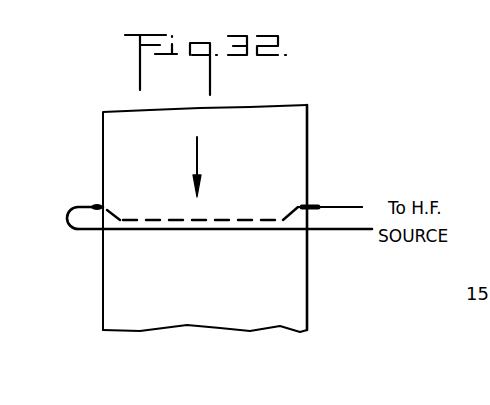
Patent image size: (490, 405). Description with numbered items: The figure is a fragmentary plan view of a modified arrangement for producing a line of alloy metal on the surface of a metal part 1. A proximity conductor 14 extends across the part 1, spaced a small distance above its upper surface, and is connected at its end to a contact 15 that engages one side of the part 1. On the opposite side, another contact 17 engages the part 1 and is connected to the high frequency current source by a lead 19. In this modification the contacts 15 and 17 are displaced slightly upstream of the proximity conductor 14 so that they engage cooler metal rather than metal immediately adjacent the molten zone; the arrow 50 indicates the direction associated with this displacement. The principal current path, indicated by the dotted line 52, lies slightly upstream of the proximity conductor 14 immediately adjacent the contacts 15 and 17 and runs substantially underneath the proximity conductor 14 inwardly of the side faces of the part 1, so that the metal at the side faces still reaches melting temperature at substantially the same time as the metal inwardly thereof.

The metal part 1 is at (292, 283).
The proximity conductor 14 is at (182, 232).
The contact 15 is at (96, 206).
The contact 17 is at (313, 205).
The lead 19 is at (362, 204).
The direction arrow 50 is at (197, 158).
The dotted line indicating principal current path 52 is at (233, 219).